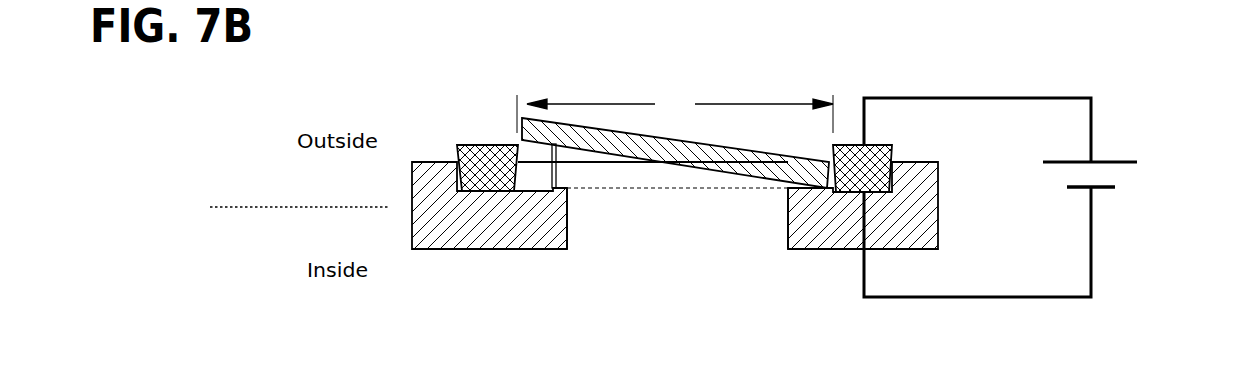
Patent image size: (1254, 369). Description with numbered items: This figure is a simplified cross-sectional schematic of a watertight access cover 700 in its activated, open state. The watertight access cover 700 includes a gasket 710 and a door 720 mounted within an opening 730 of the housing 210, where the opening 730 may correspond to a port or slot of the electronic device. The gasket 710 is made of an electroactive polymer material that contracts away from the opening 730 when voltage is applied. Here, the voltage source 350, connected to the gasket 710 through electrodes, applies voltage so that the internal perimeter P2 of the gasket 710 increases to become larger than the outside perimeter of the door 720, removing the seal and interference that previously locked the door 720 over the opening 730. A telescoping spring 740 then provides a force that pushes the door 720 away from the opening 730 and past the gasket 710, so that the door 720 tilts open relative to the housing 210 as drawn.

The watertight access cover 700 is at (675, 193).
The housing 210 is at (440, 170).
The gasket 710 is at (495, 165).
The door 720 is at (741, 164).
The opening 730 is at (603, 243).
The telescoping spring 740 is at (558, 175).
The voltage source 350 is at (1118, 150).